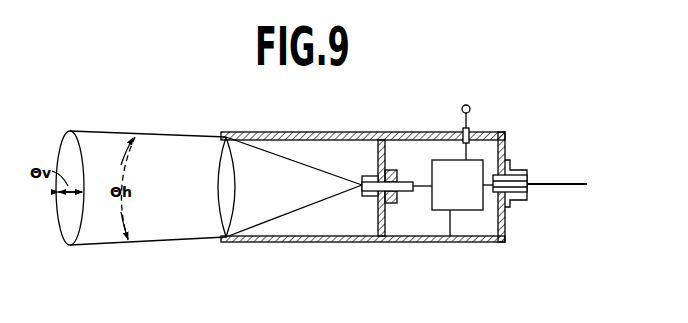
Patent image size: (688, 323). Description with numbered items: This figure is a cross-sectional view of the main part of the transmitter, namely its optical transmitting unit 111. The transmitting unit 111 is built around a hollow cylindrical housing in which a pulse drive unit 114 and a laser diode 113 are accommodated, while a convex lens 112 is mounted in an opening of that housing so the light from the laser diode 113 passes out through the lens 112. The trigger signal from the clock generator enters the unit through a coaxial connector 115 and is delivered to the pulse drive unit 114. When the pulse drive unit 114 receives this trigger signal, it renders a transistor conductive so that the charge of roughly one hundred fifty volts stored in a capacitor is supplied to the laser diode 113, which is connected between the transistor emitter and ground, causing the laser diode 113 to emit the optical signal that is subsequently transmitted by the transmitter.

The optical transmitting unit 111 is at (348, 243).
The convex lens 112 is at (218, 198).
The laser diode 113 is at (372, 200).
The pulse drive unit 114 is at (476, 212).
The coaxial connector 115 is at (518, 169).